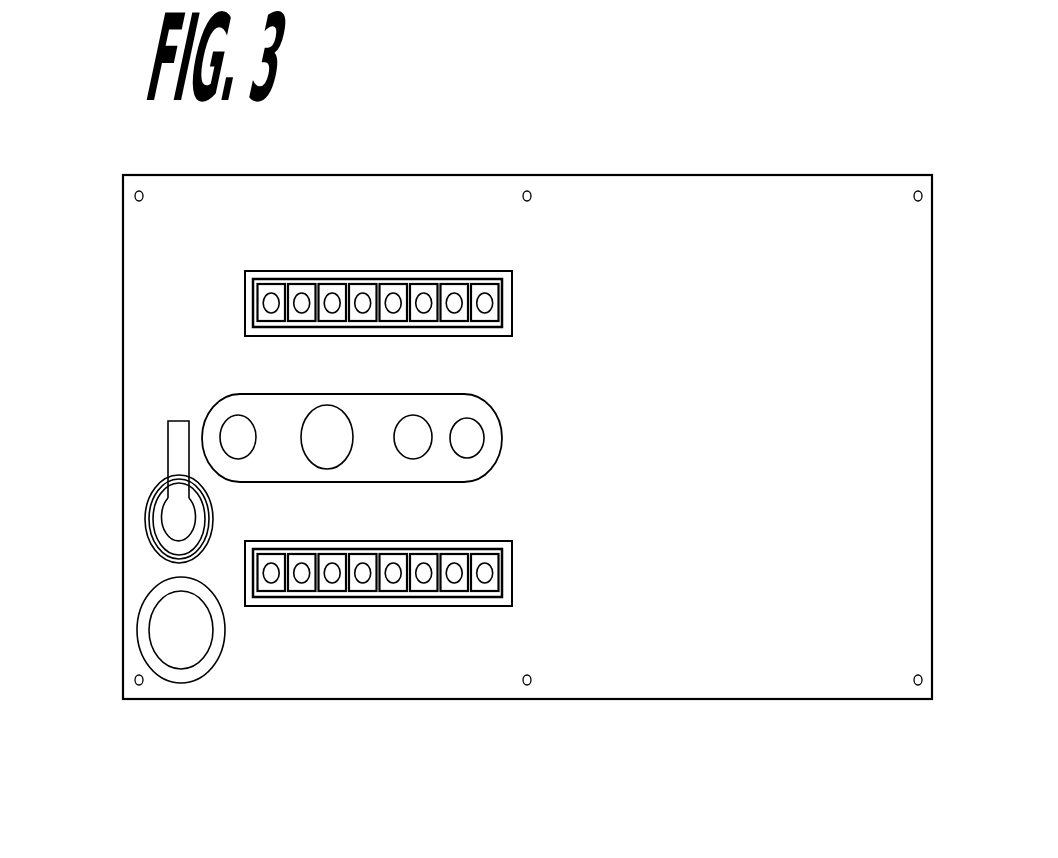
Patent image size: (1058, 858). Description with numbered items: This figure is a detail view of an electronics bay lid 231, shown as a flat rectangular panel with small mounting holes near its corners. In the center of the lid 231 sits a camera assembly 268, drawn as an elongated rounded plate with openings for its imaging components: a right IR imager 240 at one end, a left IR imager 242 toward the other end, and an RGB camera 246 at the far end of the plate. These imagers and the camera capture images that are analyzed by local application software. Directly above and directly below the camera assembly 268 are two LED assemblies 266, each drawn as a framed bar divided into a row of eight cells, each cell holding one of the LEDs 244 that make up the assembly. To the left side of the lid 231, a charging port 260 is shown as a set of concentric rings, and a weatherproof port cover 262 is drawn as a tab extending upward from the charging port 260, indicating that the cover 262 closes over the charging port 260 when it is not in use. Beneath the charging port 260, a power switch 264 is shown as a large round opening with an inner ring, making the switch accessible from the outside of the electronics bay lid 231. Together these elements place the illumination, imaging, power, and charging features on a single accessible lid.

The electronics bay lid 231 is at (718, 172).
The right IR imager 240 is at (231, 411).
The left IR imager 242 is at (421, 466).
The LEDs 244 is at (448, 296).
The RGB camera 246 is at (487, 434).
The charging port 260 is at (156, 550).
The weatherproof port cover 262 is at (178, 438).
The power switch 264 is at (210, 670).
The LED assemblies 266 is at (515, 298).
The camera assembly 268 is at (494, 400).